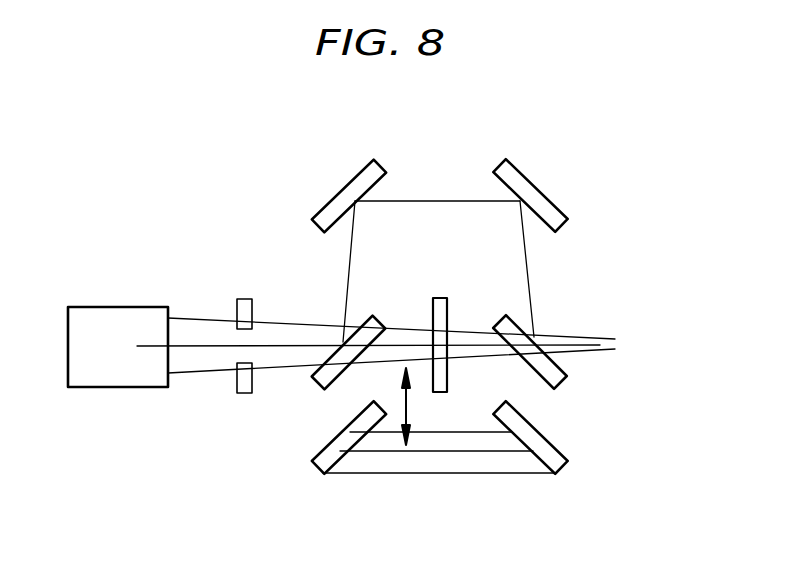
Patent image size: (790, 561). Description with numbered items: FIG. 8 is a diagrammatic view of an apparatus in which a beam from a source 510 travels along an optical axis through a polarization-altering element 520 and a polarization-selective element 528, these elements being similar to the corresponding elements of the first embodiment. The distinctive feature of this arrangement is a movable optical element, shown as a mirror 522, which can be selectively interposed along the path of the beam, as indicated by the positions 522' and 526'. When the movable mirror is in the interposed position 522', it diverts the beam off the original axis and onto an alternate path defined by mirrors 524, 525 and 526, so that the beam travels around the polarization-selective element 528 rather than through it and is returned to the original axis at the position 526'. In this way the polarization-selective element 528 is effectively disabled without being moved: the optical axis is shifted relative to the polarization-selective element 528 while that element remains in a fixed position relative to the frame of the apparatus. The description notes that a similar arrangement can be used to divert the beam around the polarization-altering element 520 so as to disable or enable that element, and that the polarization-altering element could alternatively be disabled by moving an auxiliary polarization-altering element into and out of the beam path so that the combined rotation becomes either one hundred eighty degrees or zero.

The source 510 is at (123, 307).
The polarization-altering element 520 is at (244, 298).
The mirror 522 is at (324, 437).
The mirror in interposed position 522' is at (338, 334).
The mirror 524 is at (342, 192).
The mirror 525 is at (537, 185).
The mirror 526 is at (552, 437).
The mirror in interposed position 526' is at (543, 335).
The polarization-selective element 528 is at (444, 297).